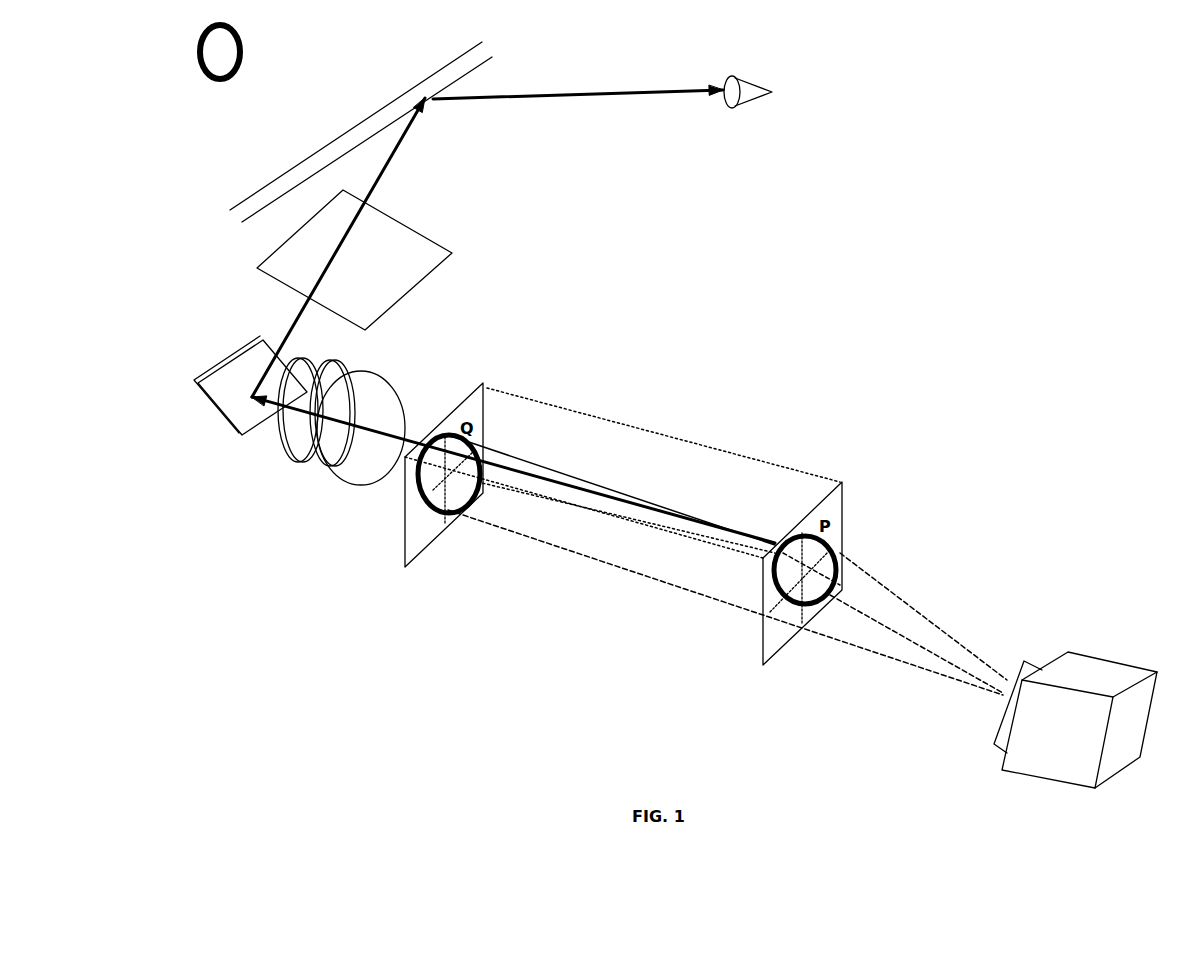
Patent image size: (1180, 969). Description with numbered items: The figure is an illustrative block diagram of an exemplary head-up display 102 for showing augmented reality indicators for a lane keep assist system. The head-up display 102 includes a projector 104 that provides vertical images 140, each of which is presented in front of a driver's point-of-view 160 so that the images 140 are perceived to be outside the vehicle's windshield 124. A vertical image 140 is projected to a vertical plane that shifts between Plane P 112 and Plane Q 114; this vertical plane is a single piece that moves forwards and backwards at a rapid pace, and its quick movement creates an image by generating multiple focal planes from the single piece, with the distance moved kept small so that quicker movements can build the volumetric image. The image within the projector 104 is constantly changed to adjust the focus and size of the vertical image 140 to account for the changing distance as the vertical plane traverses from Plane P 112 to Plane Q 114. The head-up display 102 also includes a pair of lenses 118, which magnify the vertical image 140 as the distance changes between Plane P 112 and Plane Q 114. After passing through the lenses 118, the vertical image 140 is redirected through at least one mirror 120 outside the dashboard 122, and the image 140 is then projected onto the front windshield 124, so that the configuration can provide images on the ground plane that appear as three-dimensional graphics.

The head-up display 102 is at (818, 222).
The projector 104 is at (1088, 655).
The Plane P 112 is at (838, 480).
The Plane Q 114 is at (487, 383).
The lenses 118 is at (323, 360).
The mirror 120 is at (257, 337).
The dashboard 122 is at (410, 222).
The windshield 124 is at (492, 57).
The vertical image 140 is at (241, 42).
The driver's point-of-view 160 is at (745, 76).